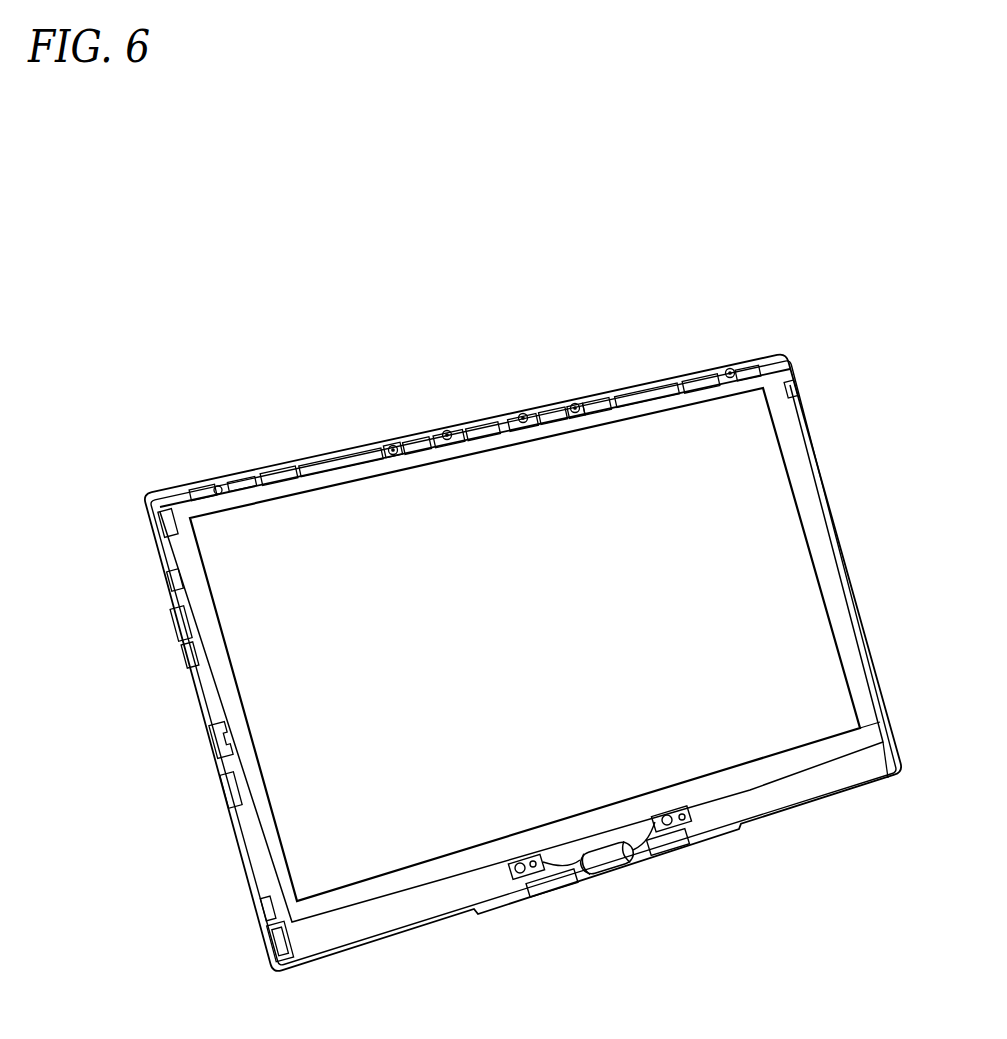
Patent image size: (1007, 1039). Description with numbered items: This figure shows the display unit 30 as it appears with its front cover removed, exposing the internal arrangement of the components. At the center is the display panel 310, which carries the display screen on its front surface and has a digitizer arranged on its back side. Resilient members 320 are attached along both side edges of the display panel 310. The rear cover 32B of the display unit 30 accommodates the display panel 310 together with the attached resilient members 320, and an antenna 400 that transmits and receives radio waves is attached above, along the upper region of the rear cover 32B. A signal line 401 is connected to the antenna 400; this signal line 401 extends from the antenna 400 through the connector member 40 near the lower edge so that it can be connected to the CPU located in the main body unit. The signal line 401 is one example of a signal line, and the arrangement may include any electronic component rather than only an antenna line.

The display unit 30 is at (194, 716).
The display panel 310 is at (777, 493).
The resilient members 320 is at (813, 527).
The rear cover 32B is at (368, 446).
The antenna 400 is at (273, 478).
The connector member 40 is at (600, 860).
The signal line 401 is at (653, 857).